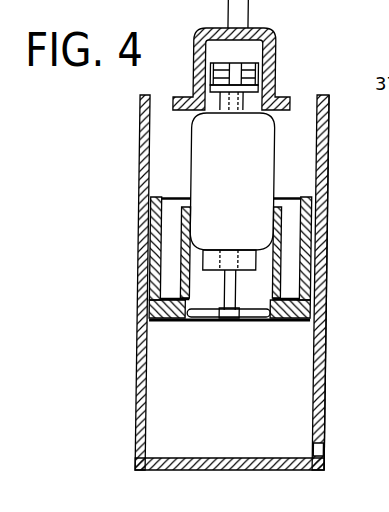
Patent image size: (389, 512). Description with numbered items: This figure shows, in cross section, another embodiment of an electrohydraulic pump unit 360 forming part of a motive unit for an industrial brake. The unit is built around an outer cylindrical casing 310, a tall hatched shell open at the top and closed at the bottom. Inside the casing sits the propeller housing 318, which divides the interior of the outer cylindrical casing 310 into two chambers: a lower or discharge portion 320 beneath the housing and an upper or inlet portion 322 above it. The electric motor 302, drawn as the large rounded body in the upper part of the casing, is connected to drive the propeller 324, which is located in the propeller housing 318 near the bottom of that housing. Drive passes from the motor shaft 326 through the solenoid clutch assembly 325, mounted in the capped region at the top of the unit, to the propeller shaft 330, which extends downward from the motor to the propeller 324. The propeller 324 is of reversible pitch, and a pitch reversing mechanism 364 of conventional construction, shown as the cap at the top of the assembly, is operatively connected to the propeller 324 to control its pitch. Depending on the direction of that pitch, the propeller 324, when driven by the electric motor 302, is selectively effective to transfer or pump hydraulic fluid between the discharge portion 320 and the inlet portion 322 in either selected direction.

The electric motor 302 is at (273, 160).
The outer cylindrical casing 310 is at (323, 208).
The propeller housing 318 is at (282, 323).
The lower or discharge portion 320 is at (300, 395).
The upper or inlet portion 322 is at (308, 170).
The propeller 324 is at (203, 318).
The solenoid clutch assembly 325 is at (261, 71).
The motor shaft 326 is at (252, 103).
The propeller shaft 330 is at (233, 301).
The electrohydraulic pump unit 360 is at (332, 140).
The pitch reversing mechanism 364 is at (277, 31).